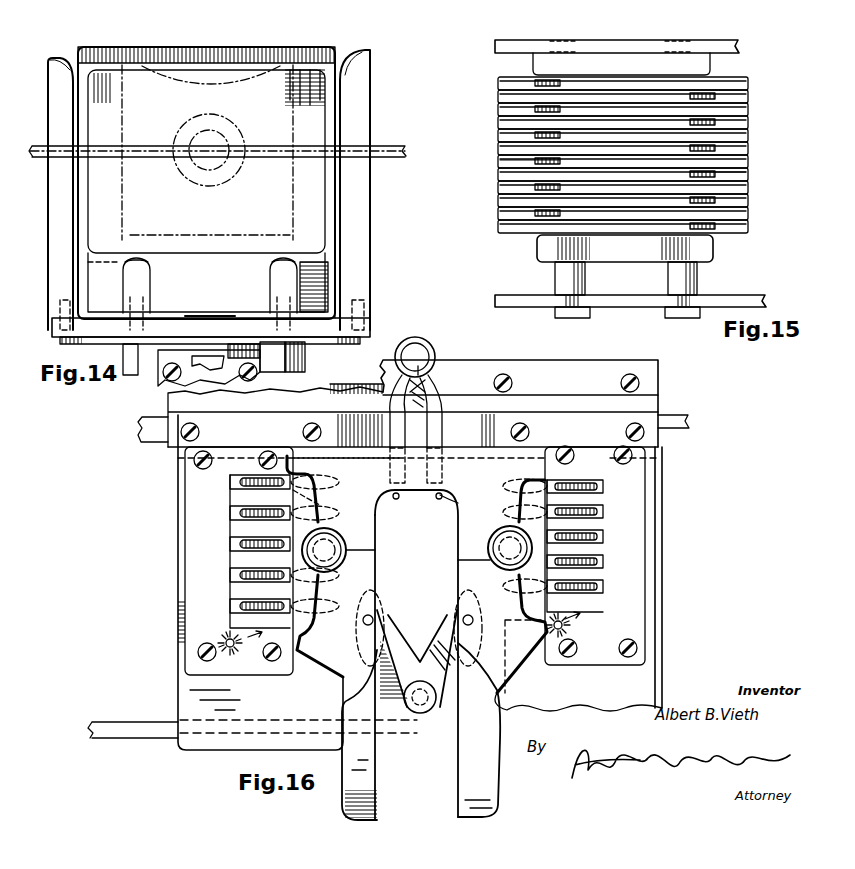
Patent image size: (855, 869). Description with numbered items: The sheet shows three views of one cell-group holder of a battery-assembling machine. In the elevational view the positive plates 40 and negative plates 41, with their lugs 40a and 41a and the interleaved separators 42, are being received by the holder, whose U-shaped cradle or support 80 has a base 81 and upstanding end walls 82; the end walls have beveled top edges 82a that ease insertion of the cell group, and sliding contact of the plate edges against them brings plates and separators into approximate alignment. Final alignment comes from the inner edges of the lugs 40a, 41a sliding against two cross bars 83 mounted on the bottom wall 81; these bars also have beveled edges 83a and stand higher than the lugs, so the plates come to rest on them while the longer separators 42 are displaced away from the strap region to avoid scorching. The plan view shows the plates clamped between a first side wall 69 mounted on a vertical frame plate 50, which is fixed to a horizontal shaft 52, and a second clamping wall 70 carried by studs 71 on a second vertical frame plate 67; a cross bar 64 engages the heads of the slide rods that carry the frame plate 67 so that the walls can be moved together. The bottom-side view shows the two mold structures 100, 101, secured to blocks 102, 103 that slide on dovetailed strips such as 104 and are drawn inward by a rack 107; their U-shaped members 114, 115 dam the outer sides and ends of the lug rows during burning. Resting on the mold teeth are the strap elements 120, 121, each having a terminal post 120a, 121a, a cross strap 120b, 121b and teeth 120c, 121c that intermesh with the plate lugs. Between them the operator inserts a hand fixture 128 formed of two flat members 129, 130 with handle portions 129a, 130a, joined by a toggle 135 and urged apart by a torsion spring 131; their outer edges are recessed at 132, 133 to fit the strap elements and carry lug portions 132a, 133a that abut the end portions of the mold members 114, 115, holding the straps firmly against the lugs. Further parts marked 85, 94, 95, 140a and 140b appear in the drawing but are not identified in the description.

In FIG. 15, the positive plate 40 is at (749, 136).
In FIG. 14, the positive plate lug 40a is at (322, 278).
In FIG. 15, the positive plate lug 40a is at (732, 192).
In FIG. 16, the positive plate lug 40a is at (604, 584).
In FIG. 14, the negative plate 41 is at (96, 181).
In FIG. 15, the negative plate 41 is at (492, 136).
In FIG. 14, the negative plate lug 41a is at (206, 282).
In FIG. 15, the negative plate lug 41a is at (515, 182).
In FIG. 16, the negative plate lug 41a is at (232, 524).
In FIG. 14, the separator 42 is at (176, 47).
In FIG. 15, the separator 42 is at (742, 162).
In FIG. 15, the vertical frame plate 50 is at (730, 42).
In FIG. 16, the vertical frame plate 50 is at (682, 428).
In FIG. 14, the horizontal shaft 52 is at (226, 119).
In FIG. 14, the cross bar 64 is at (386, 137).
In FIG. 16, the vertical frame plate 67 is at (123, 735).
In FIG. 14, the side wall 69 is at (262, 66).
In FIG. 15, the side wall 69 is at (700, 61).
In FIG. 15, the side wall 70 is at (708, 252).
In FIG. 15, the stud 71 is at (680, 280).
In FIG. 14, the U-shaped support 80 is at (382, 215).
In FIG. 14, the base 81 is at (211, 322).
In FIG. 14, the end wall 82 is at (209, 190).
In FIG. 14, the beveled top edge 82a is at (60, 58).
In FIG. 14, the cross bar 83 is at (210, 295).
In FIG. 14, the beveled edge 83a is at (285, 266).
In FIG. 14, the hatched member 85 is at (282, 360).
In FIG. 14, the lower module 94 is at (165, 357).
In FIG. 14, the tab 95 is at (210, 368).
In FIG. 16, the mold structure 100 is at (670, 599).
In FIG. 16, the mold structure 101 is at (170, 597).
In FIG. 16, the block 102 is at (669, 361).
In FIG. 16, the block 103 is at (360, 384).
In FIG. 16, the dovetailed strip 104 is at (672, 415).
In FIG. 16, the horizontal rack 107 is at (520, 384).
In FIG. 16, the U-shaped member 114 is at (630, 481).
In FIG. 16, the U-shaped member 115 is at (207, 495).
In FIG. 16, the strap element 120 is at (537, 622).
In FIG. 16, the terminal post 120a is at (490, 555).
In FIG. 16, the cross strap 120b is at (503, 500).
In FIG. 16, the teeth 120c is at (603, 543).
In FIG. 16, the strap element 121 is at (300, 500).
In FIG. 16, the terminal post 121a is at (347, 550).
In FIG. 16, the cross strap 121b is at (296, 481).
In FIG. 16, the teeth 121c is at (232, 584).
In FIG. 16, the hand fixture 128 is at (450, 440).
In FIG. 16, the flat member 129 is at (359, 695).
In FIG. 16, the handle portion 129a is at (363, 760).
In FIG. 16, the flat member 130 is at (479, 693).
In FIG. 16, the handle portion 130a is at (473, 797).
In FIG. 16, the torsion spring 131 is at (420, 333).
In FIG. 16, the recess 132 is at (336, 530).
In FIG. 16, the lug portion 132a is at (291, 450).
In FIG. 16, the recess 133 is at (490, 545).
In FIG. 16, the lug portion 133a is at (530, 450).
In FIG. 16, the toggle 135 is at (418, 660).
In FIG. 16, the left pivot 140a is at (222, 641).
In FIG. 16, the right pivot 140b is at (566, 626).